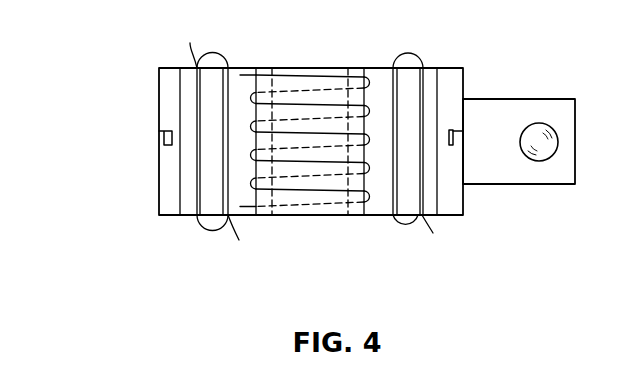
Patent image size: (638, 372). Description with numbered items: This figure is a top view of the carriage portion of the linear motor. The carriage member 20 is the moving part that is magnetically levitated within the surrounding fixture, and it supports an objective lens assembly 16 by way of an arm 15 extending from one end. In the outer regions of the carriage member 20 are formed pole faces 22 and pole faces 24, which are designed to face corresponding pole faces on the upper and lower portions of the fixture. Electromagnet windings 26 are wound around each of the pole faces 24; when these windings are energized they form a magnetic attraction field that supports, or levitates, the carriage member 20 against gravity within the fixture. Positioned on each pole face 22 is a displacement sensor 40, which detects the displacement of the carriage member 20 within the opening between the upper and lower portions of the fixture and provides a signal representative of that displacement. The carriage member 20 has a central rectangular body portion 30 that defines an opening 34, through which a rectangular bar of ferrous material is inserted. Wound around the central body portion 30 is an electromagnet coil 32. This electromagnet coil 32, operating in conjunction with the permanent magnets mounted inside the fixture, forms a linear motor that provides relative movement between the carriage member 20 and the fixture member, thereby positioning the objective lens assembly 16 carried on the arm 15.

The arm 15 is at (518, 99).
The objective lens assembly 16 is at (557, 142).
The carriage member 20 is at (128, 96).
The pole faces 22 is at (450, 210).
The pole faces 24 is at (407, 80).
The electromagnet windings 26 is at (390, 90).
The central rectangular body portion 30 is at (283, 68).
The electromagnet coil 32 is at (370, 196).
The opening 34 is at (348, 76).
The displacement sensor 40 is at (164, 135).